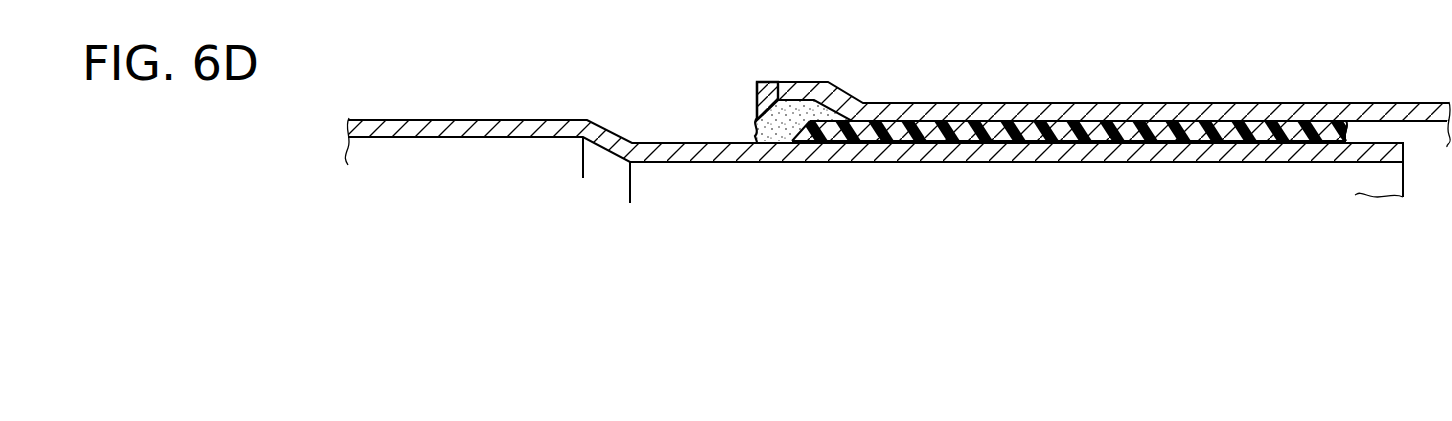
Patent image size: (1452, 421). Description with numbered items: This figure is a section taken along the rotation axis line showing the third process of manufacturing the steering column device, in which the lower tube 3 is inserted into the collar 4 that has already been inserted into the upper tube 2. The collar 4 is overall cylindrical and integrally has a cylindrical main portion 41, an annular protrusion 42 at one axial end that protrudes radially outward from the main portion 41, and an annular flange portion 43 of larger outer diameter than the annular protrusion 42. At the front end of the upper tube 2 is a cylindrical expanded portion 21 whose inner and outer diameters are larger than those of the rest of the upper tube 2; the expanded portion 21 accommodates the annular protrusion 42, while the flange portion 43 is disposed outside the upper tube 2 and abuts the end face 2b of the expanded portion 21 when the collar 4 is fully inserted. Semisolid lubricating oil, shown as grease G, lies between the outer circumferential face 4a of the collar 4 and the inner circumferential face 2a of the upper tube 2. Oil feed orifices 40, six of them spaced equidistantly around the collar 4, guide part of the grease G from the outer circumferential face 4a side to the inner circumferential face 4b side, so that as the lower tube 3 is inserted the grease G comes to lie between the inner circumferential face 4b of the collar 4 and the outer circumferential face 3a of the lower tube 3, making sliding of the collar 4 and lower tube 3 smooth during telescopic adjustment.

The upper tube 2 is at (1055, 112).
The inner circumferential face of the upper tube 2a is at (1192, 143).
The end face of the expanded portion 2b is at (755, 84).
The expanded portion 21 is at (787, 95).
The lower tube 3 is at (427, 125).
The outer circumferential face of the lower tube 3a is at (660, 143).
The collar 4 is at (1016, 120).
The outer circumferential face of the collar 4a is at (957, 120).
The inner circumferential face of the collar 4b is at (957, 143).
The oil feed orifice 40 is at (811, 114).
The main portion 41 is at (902, 125).
The annular protrusion 42 is at (789, 101).
The flange portion 43 is at (765, 86).
The grease G is at (1347, 128).